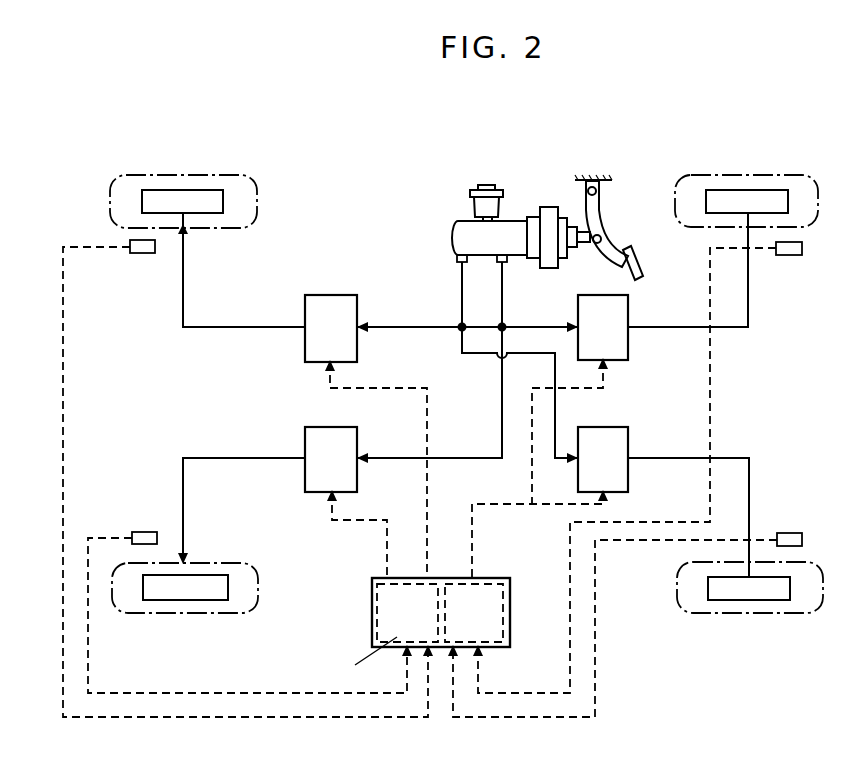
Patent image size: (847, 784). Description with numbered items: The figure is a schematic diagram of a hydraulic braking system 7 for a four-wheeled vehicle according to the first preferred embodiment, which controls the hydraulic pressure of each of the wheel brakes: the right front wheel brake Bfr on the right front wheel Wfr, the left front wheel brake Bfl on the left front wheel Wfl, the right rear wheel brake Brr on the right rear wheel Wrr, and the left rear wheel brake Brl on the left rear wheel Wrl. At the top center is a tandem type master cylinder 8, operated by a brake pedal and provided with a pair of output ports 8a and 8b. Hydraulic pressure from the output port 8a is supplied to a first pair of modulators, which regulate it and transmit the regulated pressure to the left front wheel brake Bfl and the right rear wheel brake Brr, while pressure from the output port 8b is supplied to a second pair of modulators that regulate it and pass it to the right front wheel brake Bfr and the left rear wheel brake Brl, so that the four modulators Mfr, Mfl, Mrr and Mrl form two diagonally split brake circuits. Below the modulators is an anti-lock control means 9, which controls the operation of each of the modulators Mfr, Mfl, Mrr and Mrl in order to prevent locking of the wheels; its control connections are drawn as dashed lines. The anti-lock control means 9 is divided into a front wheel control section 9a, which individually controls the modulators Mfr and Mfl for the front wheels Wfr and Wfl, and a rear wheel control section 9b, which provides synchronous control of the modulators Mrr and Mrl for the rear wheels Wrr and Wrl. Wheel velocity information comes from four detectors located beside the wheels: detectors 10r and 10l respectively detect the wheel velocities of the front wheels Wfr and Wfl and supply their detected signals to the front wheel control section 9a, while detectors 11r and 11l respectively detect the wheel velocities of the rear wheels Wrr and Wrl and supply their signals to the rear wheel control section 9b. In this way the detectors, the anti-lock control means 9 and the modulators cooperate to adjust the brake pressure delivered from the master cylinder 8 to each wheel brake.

The right front wheel Wfr is at (140, 178).
The right front wheel brake Bfr is at (205, 190).
The right rear wheel Wrr is at (708, 178).
The right rear wheel brake Brr is at (770, 190).
The left front wheel Wfl is at (143, 616).
The left front wheel brake Bfl is at (212, 598).
The left rear wheel Wrl is at (715, 616).
The left rear wheel brake Brl is at (775, 598).
The detector 10r is at (142, 254).
The detector 10l is at (142, 532).
The detector 11r is at (788, 256).
The detector 11l is at (788, 533).
The modulator Mfr is at (329, 300).
The modulator Mfl is at (325, 440).
The modulator Mrr is at (623, 311).
The modulator Mrl is at (623, 441).
The hydraulic braking system 7 is at (310, 450).
The tandem type master cylinder 8 is at (467, 228).
The output port 8a is at (507, 259).
The output port 8b is at (455, 259).
The anti-lock control means 9 is at (365, 592).
The front wheel control section 9a is at (378, 636).
The rear wheel control section 9b is at (494, 636).